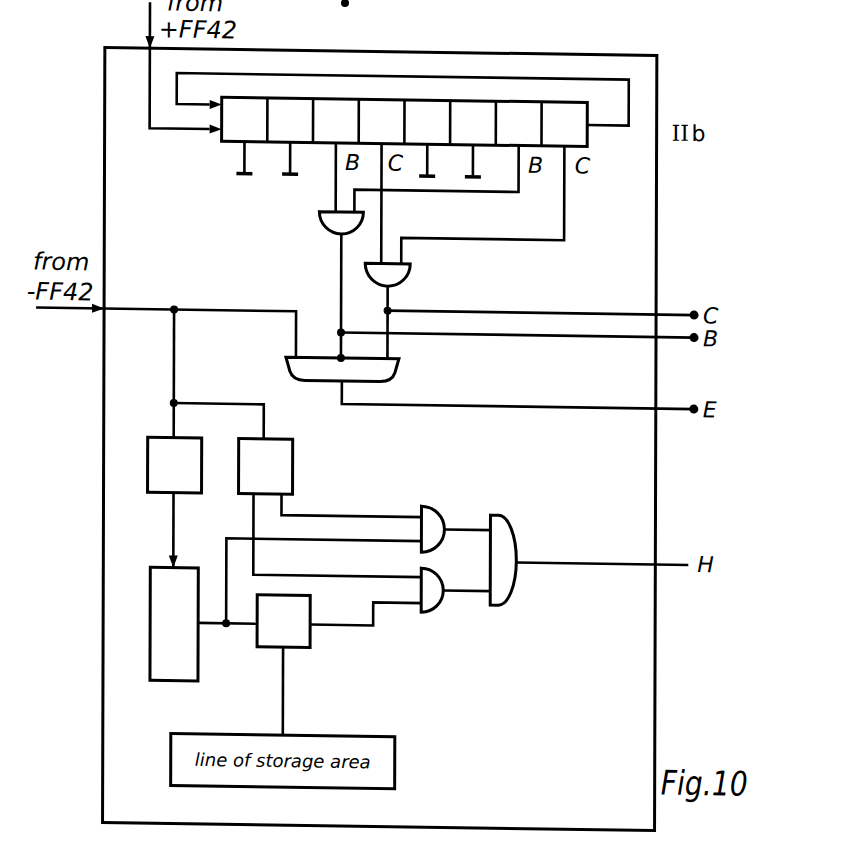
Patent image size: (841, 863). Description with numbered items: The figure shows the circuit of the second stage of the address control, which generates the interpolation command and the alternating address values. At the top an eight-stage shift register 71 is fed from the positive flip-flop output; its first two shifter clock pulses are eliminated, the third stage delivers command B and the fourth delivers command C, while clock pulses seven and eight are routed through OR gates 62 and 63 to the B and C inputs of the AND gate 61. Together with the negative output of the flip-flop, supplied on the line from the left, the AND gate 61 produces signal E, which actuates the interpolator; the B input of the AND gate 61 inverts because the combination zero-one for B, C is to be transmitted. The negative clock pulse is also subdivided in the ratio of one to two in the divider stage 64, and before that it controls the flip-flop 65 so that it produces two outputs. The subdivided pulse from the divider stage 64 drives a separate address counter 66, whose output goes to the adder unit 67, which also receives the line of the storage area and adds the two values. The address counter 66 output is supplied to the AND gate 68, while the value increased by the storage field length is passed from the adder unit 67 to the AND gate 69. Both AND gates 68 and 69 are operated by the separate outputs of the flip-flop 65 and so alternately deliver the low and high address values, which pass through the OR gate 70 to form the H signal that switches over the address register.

The AND gate 61 is at (385, 366).
The OR gate 62 is at (330, 216).
The OR gate 63 is at (395, 269).
The divider stage 64 is at (160, 446).
The flip-flop 65 is at (286, 446).
The address counter 66 is at (160, 663).
The adder unit 67 is at (297, 631).
The AND gate 68 is at (435, 516).
The AND gate 69 is at (445, 598).
The OR gate 70 is at (500, 518).
The shift register 71 is at (578, 129).